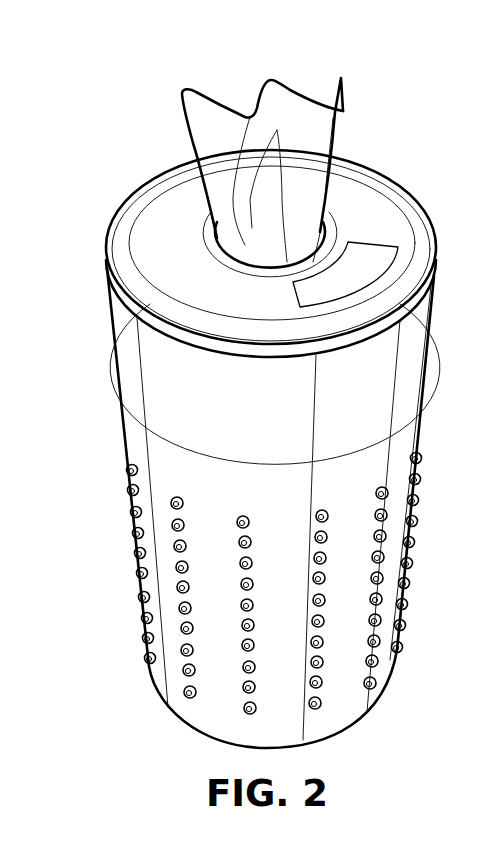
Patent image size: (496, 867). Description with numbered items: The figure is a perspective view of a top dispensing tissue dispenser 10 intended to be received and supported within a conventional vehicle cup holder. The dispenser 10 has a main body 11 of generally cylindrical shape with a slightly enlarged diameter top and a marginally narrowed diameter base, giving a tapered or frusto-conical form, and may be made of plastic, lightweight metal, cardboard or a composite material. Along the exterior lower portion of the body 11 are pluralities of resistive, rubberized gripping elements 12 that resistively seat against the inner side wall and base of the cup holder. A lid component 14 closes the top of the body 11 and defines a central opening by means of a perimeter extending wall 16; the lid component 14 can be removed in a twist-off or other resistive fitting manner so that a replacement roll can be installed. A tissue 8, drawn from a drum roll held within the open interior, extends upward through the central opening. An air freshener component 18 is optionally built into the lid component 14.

The tissue 8 is at (215, 114).
The top dispensing tissue dispenser 10 is at (98, 210).
The main body 11 is at (128, 405).
The gripping elements 12 is at (135, 535).
The lid component 14 is at (137, 283).
The perimeter extending wall 16 is at (212, 233).
The air freshener component 18 is at (375, 253).